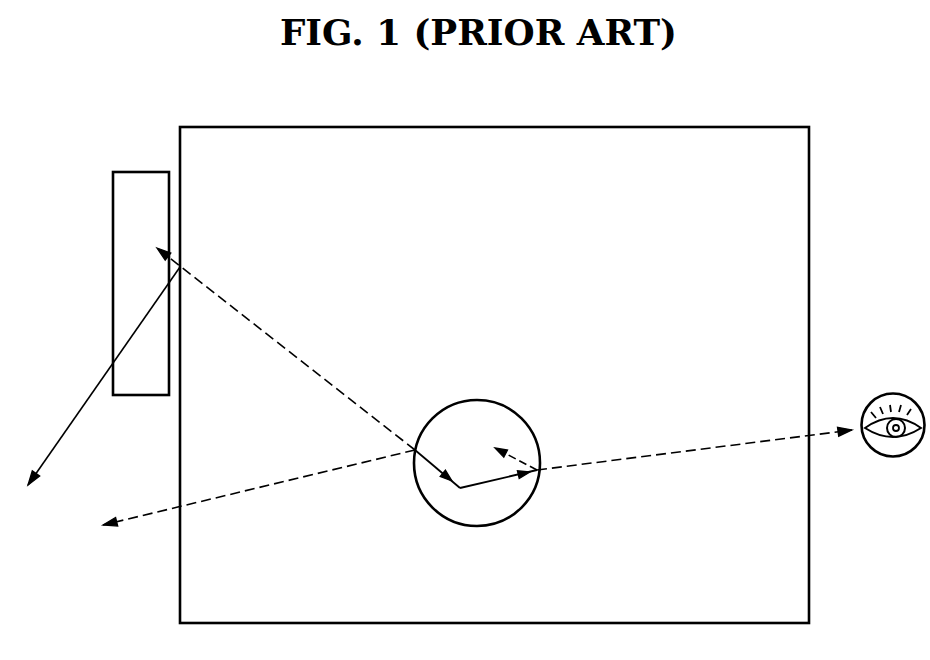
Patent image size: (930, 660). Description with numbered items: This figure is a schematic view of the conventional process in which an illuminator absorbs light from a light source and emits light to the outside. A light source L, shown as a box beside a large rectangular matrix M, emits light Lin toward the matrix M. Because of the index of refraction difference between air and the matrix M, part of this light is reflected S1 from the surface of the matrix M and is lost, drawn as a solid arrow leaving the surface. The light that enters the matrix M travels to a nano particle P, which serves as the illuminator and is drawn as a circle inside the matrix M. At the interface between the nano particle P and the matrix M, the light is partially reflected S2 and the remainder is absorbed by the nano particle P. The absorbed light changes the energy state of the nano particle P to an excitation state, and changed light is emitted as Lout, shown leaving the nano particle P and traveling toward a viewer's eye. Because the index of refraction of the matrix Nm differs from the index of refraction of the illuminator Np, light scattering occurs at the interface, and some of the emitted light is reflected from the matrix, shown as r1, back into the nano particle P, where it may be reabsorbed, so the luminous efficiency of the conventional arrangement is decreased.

The matrix M is at (494, 375).
The light source L is at (141, 283).
The light partially reflected from the matrix surface S1 is at (104, 376).
The light partially reflected at the nano particle-matrix interface S2 is at (259, 488).
The incident light Lin is at (286, 349).
The emitted light Lout is at (731, 441).
The nano particle P is at (477, 463).
The index of refraction of the illuminator Np is at (476, 525).
The index of refraction of the matrix Nm is at (732, 334).
The light reflected from the matrix r1 is at (547, 404).